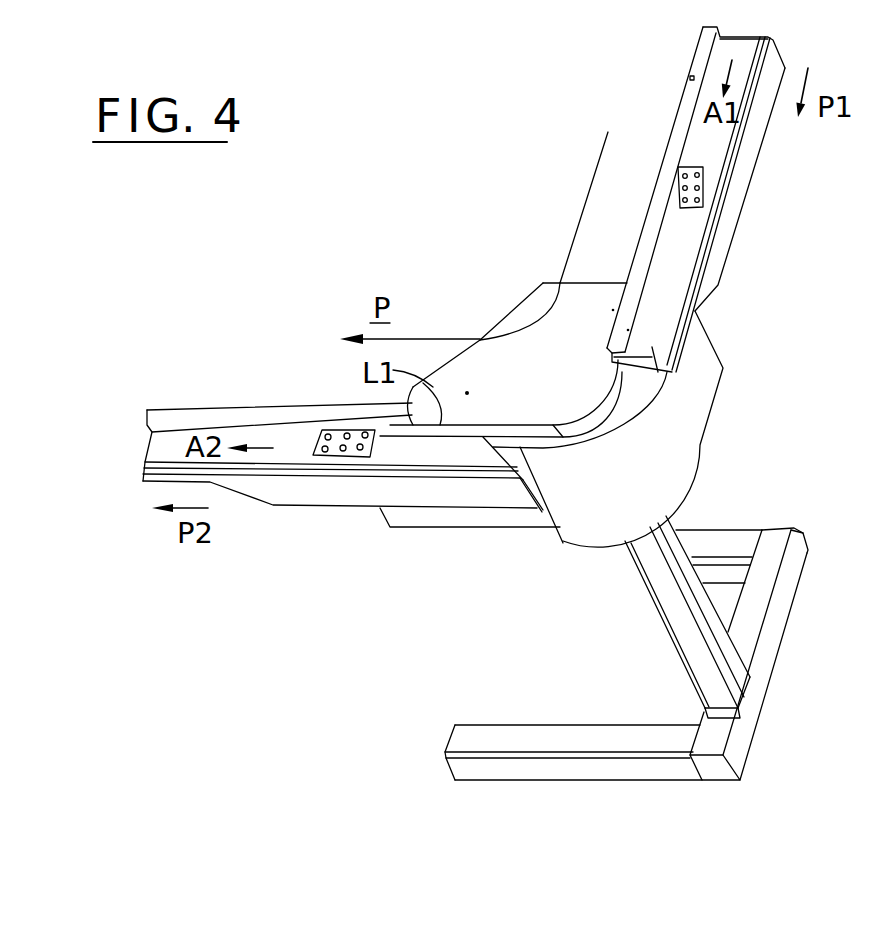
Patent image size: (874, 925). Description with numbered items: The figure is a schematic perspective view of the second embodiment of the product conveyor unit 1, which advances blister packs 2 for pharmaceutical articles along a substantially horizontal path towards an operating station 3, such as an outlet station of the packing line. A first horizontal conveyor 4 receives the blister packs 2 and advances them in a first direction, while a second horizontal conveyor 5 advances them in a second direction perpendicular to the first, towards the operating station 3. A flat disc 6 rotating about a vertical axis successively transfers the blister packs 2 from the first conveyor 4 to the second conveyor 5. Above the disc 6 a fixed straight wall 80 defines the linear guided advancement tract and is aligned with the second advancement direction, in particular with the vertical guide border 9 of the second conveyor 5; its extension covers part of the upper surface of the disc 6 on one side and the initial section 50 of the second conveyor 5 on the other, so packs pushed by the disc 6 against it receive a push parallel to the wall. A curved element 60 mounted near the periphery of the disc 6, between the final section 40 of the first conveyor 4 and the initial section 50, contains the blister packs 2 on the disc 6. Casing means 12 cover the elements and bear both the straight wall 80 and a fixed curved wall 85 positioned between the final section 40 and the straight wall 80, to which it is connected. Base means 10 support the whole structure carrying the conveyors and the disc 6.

The product conveyor unit 1 is at (483, 265).
The blister pack 2 is at (697, 193).
The operating station 3 is at (67, 433).
The first horizontal conveyor 4 is at (683, 125).
The second horizontal conveyor 5 is at (165, 448).
The flat disc 6 is at (650, 370).
The vertical guide border 9 is at (267, 428).
The base means 10 is at (620, 667).
The casing means 12 is at (595, 324).
The final section of the first conveyor 40 is at (663, 300).
The initial section of the second conveyor 50 is at (433, 452).
The curved element 60 is at (672, 465).
The fixed straight wall 80 is at (473, 432).
The fixed curved wall 85 is at (587, 425).